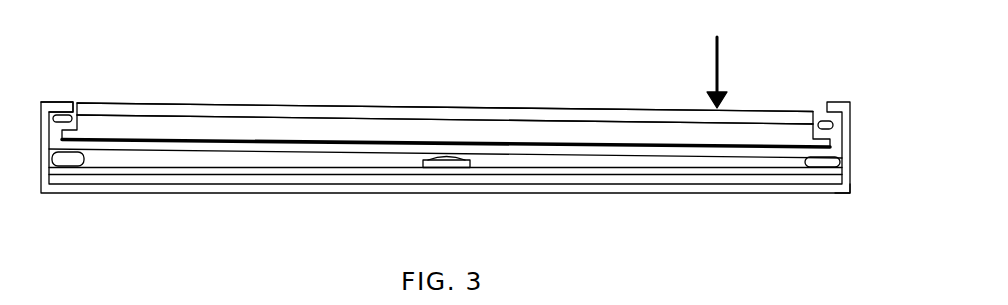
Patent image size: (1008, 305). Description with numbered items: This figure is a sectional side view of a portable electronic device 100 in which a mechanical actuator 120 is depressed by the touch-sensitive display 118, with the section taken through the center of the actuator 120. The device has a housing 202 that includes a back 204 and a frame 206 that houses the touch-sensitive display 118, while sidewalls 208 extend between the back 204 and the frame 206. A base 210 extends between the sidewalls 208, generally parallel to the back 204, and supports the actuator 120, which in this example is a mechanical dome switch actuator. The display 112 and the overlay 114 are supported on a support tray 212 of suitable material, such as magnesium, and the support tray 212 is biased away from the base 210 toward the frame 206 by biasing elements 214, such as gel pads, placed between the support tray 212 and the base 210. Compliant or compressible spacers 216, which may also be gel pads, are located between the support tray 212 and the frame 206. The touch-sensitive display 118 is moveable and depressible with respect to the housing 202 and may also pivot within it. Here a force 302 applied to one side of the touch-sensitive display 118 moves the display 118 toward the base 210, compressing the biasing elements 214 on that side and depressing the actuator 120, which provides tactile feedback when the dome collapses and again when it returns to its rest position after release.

The portable electronic device 100 is at (630, 65).
The display 112 is at (389, 118).
The overlay 114 is at (488, 110).
The touch-sensitive display 118 is at (322, 105).
The mechanical actuator 120 is at (440, 165).
The housing 202 is at (625, 193).
The back 204 is at (548, 190).
The frame 206 is at (52, 102).
The sidewalls 208 is at (848, 197).
The base 210 is at (307, 170).
The support tray 212 is at (240, 145).
The biasing elements 214 is at (810, 163).
The spacers 216 is at (820, 118).
The force 302 is at (718, 70).